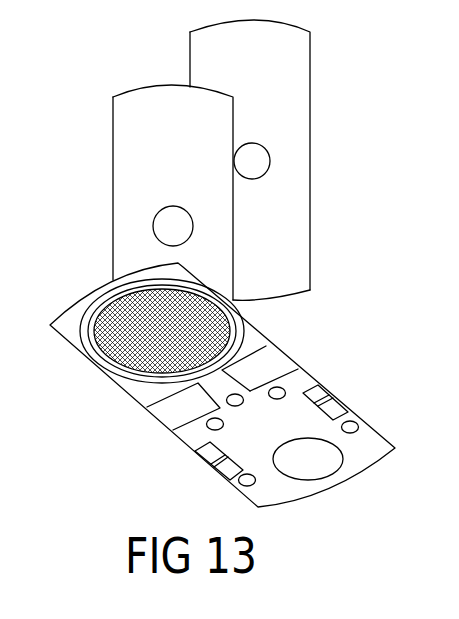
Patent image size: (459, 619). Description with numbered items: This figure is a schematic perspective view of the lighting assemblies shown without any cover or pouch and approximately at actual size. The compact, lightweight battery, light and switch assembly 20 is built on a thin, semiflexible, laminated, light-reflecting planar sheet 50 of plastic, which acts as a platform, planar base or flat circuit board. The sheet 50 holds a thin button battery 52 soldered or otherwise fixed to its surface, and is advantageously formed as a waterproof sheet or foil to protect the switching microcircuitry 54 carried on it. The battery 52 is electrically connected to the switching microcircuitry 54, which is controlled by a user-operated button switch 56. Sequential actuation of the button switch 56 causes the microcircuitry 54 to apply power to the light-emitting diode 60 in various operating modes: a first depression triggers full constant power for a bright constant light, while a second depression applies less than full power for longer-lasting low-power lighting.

The battery, light and switch assembly 20 is at (223, 45).
The planar sheet 50 is at (140, 170).
The button battery 52 is at (133, 338).
The switching microcircuitry 54 is at (270, 360).
The button switch 56 is at (307, 461).
The light-emitting diode 60 is at (243, 162).